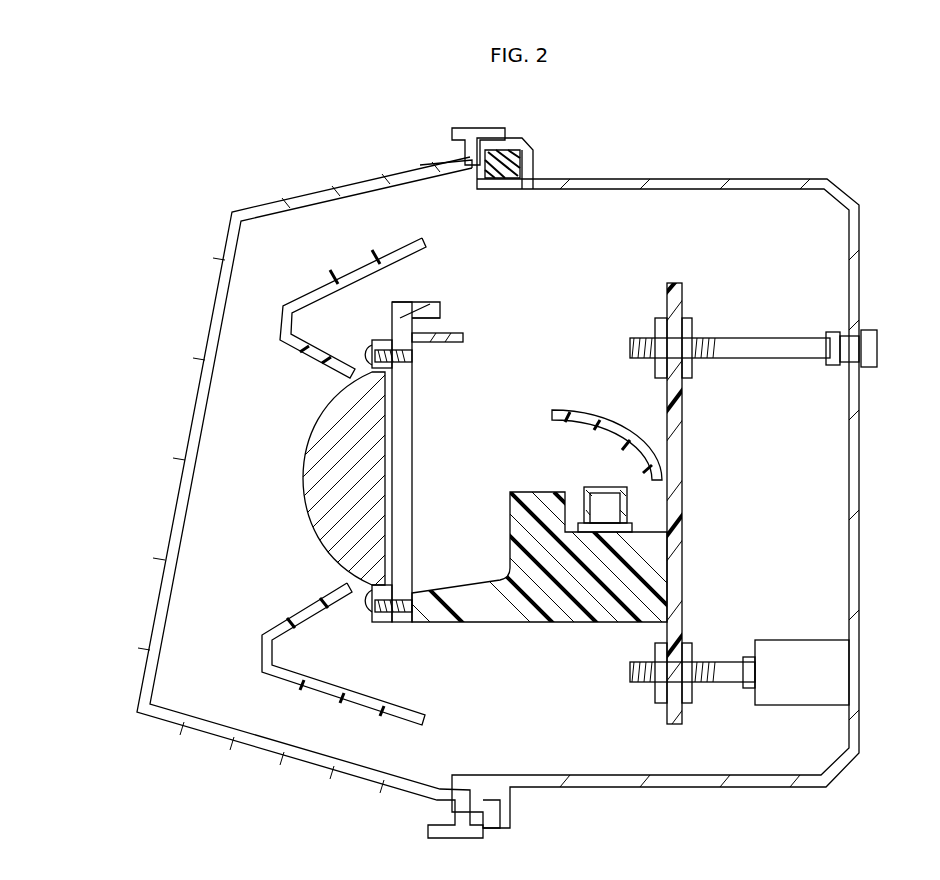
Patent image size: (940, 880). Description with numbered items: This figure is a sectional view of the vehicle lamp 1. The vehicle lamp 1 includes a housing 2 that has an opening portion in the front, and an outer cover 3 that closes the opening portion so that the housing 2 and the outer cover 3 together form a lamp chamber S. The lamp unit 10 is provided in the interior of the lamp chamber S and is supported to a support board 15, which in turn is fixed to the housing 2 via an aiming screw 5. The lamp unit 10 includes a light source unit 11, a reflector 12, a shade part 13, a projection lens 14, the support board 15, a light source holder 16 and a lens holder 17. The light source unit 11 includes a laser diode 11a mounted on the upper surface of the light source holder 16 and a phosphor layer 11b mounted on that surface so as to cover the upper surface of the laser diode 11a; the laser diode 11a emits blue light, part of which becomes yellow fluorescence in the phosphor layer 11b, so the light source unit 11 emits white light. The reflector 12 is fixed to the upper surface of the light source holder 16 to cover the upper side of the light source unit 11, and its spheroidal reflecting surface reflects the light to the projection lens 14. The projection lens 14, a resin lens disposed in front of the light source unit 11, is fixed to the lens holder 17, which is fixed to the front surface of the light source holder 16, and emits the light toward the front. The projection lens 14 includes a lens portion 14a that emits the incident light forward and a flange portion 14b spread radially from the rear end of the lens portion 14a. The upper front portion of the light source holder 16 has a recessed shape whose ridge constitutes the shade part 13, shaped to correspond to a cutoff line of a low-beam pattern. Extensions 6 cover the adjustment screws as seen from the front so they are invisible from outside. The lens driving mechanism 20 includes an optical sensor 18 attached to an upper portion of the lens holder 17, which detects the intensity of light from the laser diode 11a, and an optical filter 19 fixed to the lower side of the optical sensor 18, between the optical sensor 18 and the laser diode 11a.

The vehicle lamp 1 is at (872, 158).
The housing 2 is at (718, 179).
The outer cover 3 is at (330, 190).
The aiming screw 5 is at (733, 660).
The extensions 6 is at (326, 280).
The lamp unit 10 is at (542, 312).
The light source unit 11 is at (646, 479).
The laser diode 11a is at (612, 525).
The phosphor layer 11b is at (628, 496).
The reflector 12 is at (566, 405).
The shade part 13 is at (543, 558).
The projection lens 14 is at (314, 461).
The lens portion 14a is at (305, 462).
The flange portion 14b is at (383, 345).
The support board 15 is at (685, 296).
The light source holder 16 is at (590, 612).
The lens holder 17 is at (443, 450).
The optical sensor 18 is at (446, 310).
The optical filter 19 is at (465, 338).
The lens driving mechanism 20 is at (424, 362).
The lamp chamber S is at (215, 688).